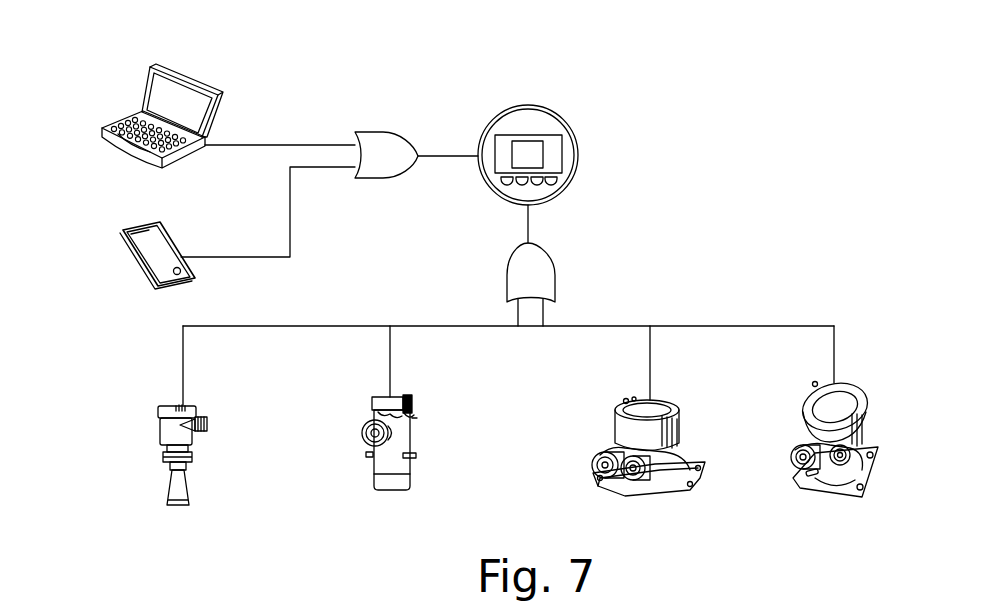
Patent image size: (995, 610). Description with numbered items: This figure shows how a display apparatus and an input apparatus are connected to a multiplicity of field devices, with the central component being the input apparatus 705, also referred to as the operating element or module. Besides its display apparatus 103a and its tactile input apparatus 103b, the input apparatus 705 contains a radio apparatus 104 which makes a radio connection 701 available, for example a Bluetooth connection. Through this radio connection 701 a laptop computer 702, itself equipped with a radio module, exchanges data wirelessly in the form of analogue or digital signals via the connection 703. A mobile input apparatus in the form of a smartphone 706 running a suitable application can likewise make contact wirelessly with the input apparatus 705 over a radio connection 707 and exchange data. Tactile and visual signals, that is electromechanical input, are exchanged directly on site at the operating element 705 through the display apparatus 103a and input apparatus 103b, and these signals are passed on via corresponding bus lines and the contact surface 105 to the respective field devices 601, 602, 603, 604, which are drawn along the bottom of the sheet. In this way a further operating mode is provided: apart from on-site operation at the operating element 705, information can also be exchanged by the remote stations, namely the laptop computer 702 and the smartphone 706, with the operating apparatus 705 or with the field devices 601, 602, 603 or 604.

The laptop computer 702 is at (193, 72).
The connection 703 is at (292, 145).
The radio connection 701 is at (368, 128).
The input apparatus 705 is at (568, 137).
The display apparatus 103a is at (558, 140).
The radio apparatus 104 is at (545, 156).
The input apparatus 103b is at (562, 178).
The smartphone 706 is at (148, 310).
The radio connection 707 is at (292, 247).
The contact surface 105 is at (557, 282).
The field device 601 is at (150, 455).
The field device 602 is at (358, 452).
The field device 603 is at (587, 463).
The field device 604 is at (787, 463).